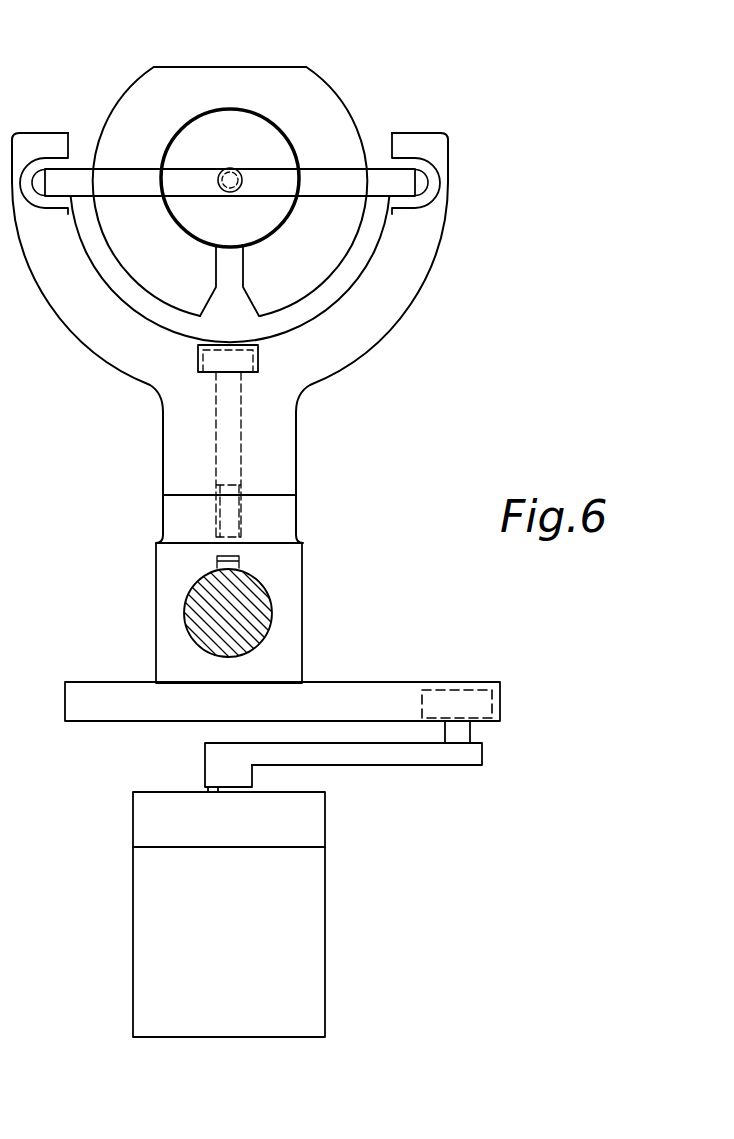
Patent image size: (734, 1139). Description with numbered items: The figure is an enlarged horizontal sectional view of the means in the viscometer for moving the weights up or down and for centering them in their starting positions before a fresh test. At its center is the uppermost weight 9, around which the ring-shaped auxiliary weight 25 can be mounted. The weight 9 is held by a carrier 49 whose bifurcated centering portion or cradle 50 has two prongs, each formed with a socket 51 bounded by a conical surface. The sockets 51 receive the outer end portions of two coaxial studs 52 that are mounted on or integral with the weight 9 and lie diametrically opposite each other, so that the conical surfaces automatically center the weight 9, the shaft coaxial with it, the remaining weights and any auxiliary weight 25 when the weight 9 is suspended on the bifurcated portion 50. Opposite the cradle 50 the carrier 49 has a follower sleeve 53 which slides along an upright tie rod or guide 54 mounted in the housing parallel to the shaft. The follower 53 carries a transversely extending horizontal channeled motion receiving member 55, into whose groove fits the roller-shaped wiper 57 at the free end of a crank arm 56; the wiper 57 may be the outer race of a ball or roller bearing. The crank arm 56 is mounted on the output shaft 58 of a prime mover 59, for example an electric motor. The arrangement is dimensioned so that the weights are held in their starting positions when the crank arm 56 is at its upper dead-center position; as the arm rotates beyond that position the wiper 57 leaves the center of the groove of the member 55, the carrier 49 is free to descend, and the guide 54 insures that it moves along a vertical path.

The weight 9 is at (247, 135).
The auxiliary weight 25 is at (188, 88).
The carrier 49 is at (338, 422).
The bifurcated centering portion 50 is at (405, 289).
The socket 51 is at (417, 166).
The stud 52 is at (80, 183).
The follower sleeve 53 is at (303, 605).
The tie rod 54 is at (204, 612).
The motion receiving member 55 is at (112, 708).
The crank arm 56 is at (447, 752).
The wiper 57 is at (483, 705).
The output shaft 58 is at (208, 789).
The prime mover 59 is at (158, 964).